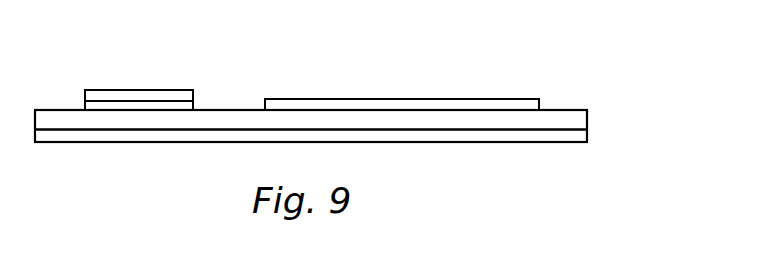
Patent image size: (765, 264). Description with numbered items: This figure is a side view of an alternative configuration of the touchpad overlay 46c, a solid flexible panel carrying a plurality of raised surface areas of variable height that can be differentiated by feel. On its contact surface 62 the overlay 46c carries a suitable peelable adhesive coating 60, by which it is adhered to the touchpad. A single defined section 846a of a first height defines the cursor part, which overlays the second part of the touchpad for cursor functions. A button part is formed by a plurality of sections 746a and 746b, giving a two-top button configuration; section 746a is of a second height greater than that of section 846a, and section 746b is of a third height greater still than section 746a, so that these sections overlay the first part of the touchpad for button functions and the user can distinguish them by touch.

The overlay 46c is at (588, 118).
The peelable adhesive coating 60 is at (110, 142).
The contact surface 62 is at (188, 132).
The section 746a is at (110, 98).
The section 746b is at (164, 87).
The single defined section 846a is at (408, 98).